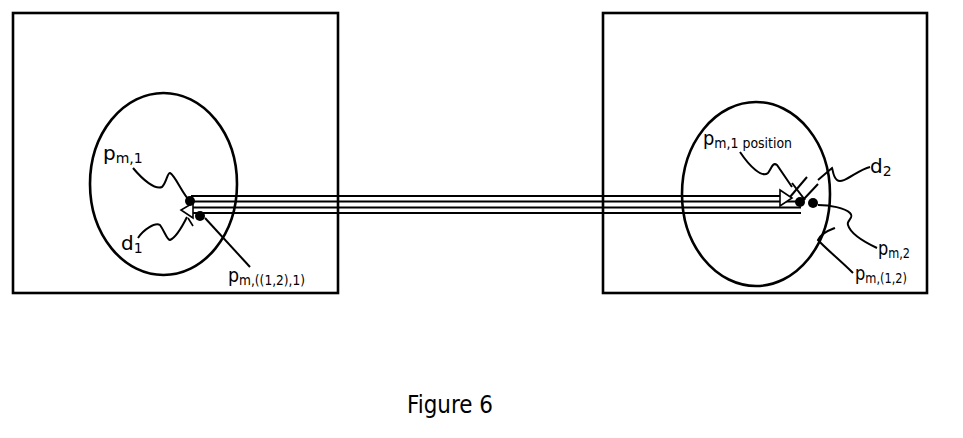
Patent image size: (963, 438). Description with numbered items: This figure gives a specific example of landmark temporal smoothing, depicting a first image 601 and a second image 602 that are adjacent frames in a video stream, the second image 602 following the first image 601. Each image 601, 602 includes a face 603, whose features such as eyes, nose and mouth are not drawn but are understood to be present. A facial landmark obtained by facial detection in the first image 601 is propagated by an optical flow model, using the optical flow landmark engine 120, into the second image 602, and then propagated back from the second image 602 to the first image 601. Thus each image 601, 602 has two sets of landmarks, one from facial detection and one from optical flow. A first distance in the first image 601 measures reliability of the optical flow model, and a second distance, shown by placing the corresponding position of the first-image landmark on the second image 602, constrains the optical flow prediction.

The first image 601 is at (198, 85).
The second image 602 is at (788, 85).
The face 603 is at (123, 112).
The optical flow landmark engine 120 is at (493, 200).